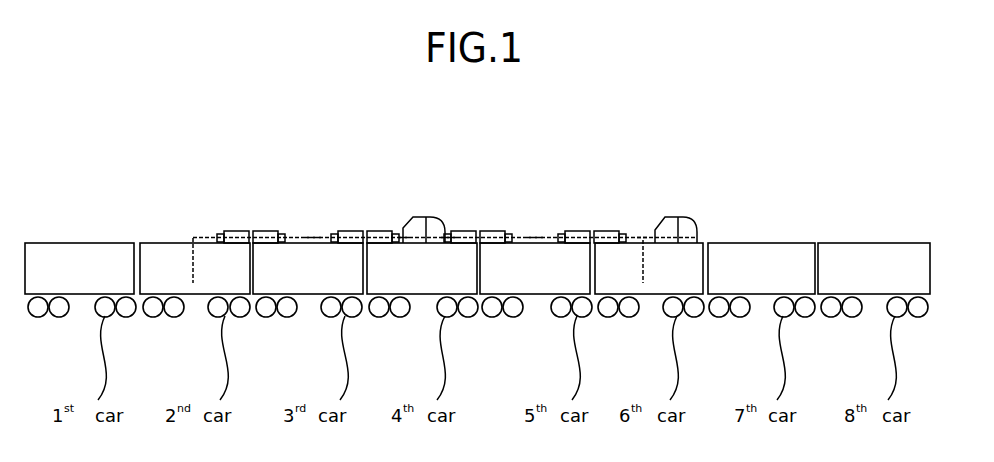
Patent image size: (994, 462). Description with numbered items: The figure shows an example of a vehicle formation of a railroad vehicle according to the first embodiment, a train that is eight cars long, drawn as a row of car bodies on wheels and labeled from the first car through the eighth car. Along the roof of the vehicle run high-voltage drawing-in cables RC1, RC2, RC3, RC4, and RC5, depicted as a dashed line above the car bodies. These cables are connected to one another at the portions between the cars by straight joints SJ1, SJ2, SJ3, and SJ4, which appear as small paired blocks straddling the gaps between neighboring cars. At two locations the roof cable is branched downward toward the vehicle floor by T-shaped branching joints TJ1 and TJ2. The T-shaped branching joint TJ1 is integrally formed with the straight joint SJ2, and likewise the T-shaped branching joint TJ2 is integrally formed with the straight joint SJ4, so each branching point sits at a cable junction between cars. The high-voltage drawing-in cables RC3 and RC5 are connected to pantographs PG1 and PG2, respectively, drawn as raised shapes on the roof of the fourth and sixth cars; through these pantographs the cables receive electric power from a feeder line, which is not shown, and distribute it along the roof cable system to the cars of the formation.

The high-voltage drawing-in cable RC1 is at (193, 232).
The high-voltage drawing-in cable RC2 is at (313, 236).
The high-voltage drawing-in cable RC3 is at (449, 236).
The high-voltage drawing-in cable RC4 is at (535, 234).
The high-voltage drawing-in cable RC5 is at (625, 233).
The straight joint SJ1 is at (250, 226).
The straight joint SJ2 is at (368, 228).
The straight joint SJ3 is at (487, 228).
The straight joint SJ4 is at (595, 228).
The pantograph PG1 is at (426, 217).
The pantograph PG2 is at (678, 217).
The T-shaped branching joint TJ1 is at (405, 233).
The T-shaped branching joint TJ2 is at (643, 233).